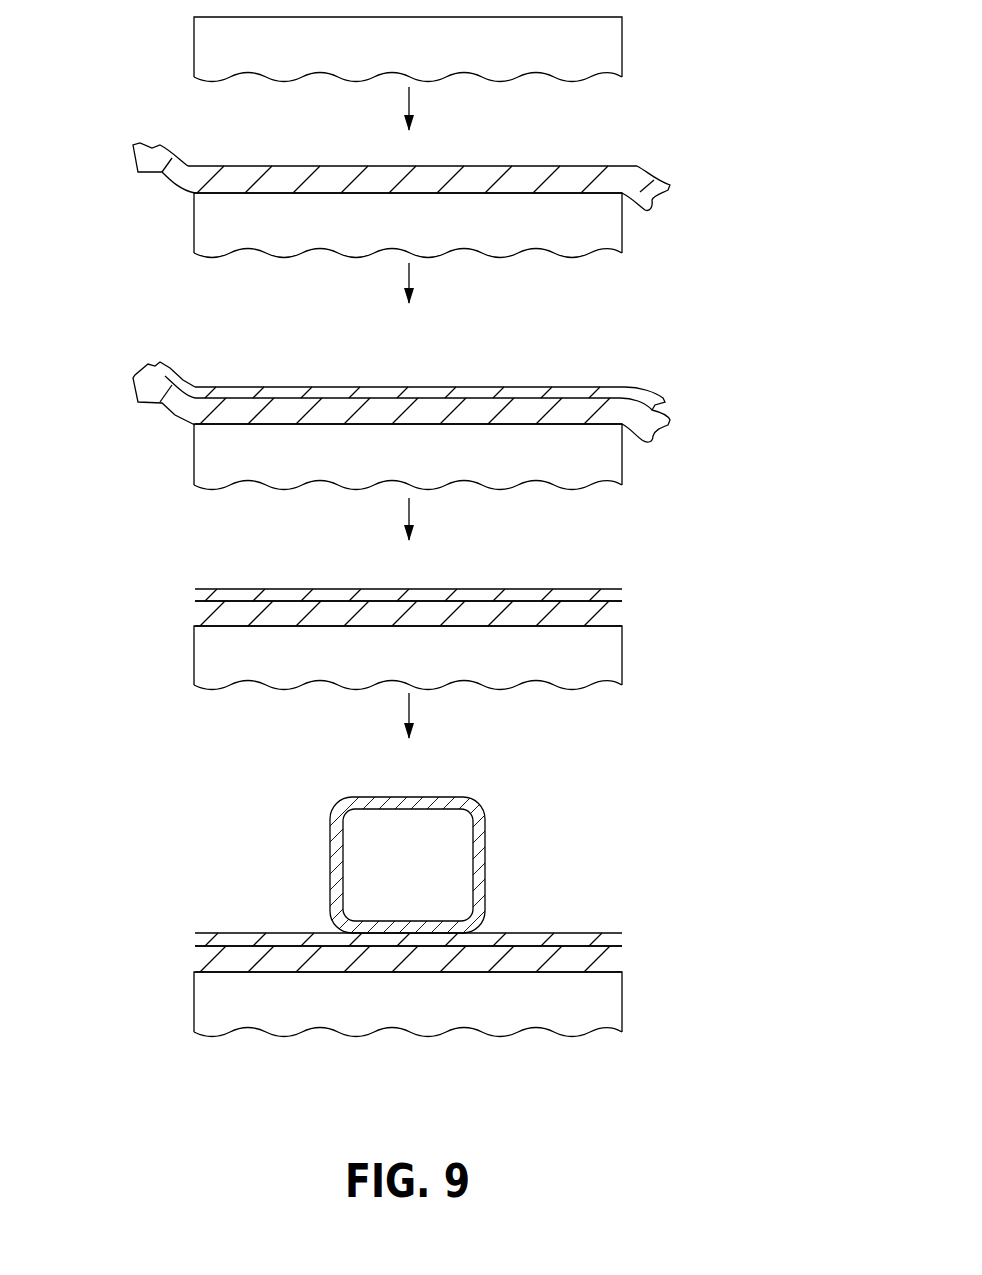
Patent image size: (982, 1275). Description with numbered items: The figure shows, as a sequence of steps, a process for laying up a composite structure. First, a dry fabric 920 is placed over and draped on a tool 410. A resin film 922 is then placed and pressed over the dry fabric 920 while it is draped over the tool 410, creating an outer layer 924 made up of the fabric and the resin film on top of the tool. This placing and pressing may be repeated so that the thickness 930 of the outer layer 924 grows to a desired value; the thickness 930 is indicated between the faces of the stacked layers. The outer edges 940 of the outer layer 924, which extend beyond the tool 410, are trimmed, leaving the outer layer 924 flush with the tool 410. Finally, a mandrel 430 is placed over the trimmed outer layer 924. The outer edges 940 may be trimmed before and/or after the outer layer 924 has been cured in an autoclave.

The tool 410 is at (600, 60).
The dry fabric 920 is at (430, 171).
The resin film 922 is at (590, 388).
The outer layer 924 is at (465, 364).
The thickness 930 is at (359, 462).
The outer edges 940 is at (115, 361).
The mandrel 430 is at (485, 850).